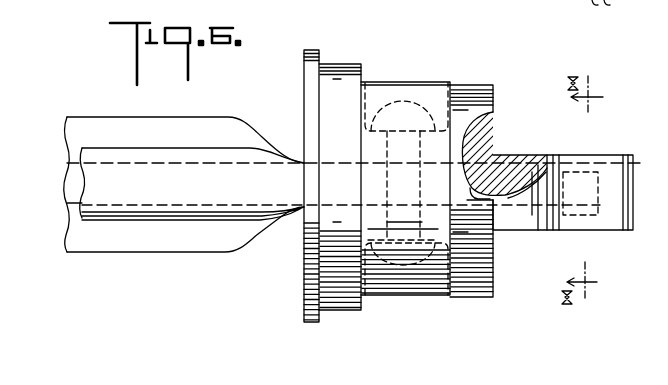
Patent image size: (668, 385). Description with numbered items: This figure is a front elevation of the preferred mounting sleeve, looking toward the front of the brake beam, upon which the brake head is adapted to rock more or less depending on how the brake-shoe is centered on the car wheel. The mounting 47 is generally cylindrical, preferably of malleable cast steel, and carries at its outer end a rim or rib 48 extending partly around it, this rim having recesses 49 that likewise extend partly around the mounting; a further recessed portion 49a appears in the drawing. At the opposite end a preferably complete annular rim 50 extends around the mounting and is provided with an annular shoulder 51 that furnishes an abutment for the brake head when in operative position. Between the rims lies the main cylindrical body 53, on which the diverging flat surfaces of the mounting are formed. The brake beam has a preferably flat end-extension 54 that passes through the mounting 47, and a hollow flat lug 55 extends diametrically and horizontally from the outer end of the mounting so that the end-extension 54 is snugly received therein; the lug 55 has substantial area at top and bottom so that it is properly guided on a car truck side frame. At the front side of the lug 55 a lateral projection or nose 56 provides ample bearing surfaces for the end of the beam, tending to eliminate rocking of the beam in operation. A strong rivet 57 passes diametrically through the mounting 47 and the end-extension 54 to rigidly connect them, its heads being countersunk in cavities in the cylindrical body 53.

The mounting 47 is at (412, 301).
The rim or rib 48 is at (494, 113).
The recesses 49 is at (481, 86).
The lower portion of ring collar 49a is at (486, 299).
The annular rim 50 is at (350, 64).
The annular shoulder 51 is at (312, 48).
The main cylindrical body 53 is at (413, 82).
The end-extension 54 is at (298, 160).
The flat lug 55 is at (526, 231).
The lateral projection or nose 56 is at (585, 160).
The rivet 57 is at (429, 119).